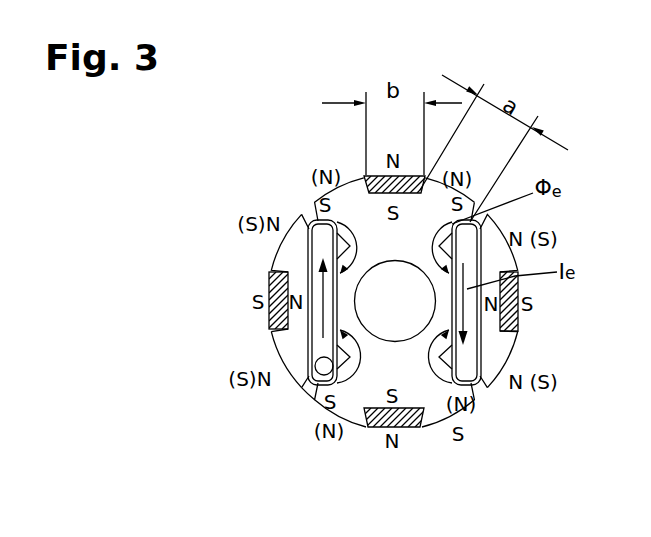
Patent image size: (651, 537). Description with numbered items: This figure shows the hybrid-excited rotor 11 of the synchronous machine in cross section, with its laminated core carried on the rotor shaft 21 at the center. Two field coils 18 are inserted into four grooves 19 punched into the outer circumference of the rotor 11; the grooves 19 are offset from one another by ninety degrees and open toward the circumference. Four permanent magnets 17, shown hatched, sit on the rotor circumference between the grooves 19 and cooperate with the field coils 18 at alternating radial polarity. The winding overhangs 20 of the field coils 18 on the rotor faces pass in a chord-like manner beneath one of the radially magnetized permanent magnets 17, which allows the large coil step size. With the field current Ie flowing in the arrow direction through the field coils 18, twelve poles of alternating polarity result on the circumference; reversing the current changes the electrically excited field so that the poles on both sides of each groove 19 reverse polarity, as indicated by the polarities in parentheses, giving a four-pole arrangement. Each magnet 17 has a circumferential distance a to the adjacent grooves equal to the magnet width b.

The rotor 11 is at (356, 410).
The permanent magnets 17 is at (519, 320).
The field coils 18 is at (276, 348).
The grooves 19 is at (311, 386).
The winding overhangs 20 is at (320, 232).
The rotor shaft 21 is at (406, 323).